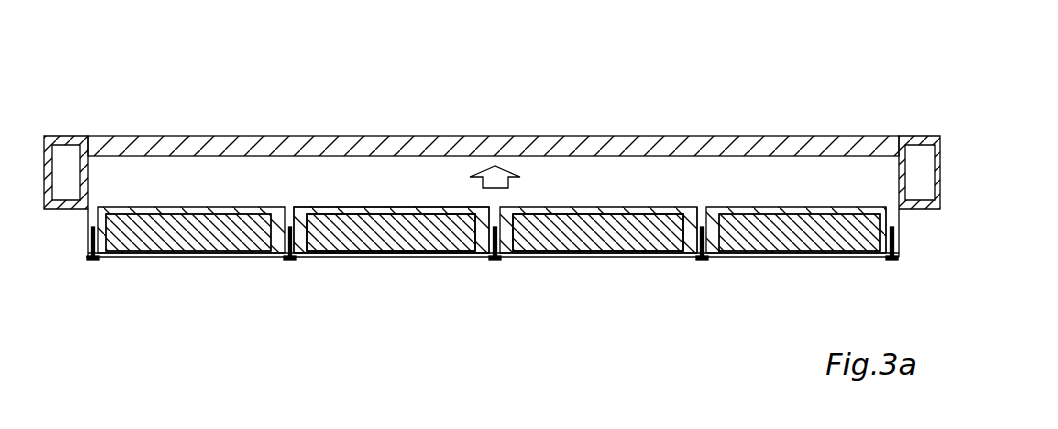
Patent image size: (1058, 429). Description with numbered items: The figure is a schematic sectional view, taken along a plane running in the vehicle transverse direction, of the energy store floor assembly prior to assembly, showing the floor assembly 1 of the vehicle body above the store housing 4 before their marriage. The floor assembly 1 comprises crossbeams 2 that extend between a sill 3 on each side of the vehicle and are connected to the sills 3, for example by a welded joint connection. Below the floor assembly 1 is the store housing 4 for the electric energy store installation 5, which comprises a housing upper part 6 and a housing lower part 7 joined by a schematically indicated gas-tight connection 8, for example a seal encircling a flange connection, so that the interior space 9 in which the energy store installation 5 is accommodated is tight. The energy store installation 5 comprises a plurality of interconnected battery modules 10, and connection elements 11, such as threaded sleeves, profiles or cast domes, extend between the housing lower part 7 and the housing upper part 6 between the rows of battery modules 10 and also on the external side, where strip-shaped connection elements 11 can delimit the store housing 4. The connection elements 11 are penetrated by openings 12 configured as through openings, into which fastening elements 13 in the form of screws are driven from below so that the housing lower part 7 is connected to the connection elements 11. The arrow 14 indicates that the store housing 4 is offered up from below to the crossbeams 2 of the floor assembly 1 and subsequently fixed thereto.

The floor assembly 1 is at (730, 93).
The crossbeam 2 is at (795, 143).
The sill 3 is at (70, 140).
The store housing 4 is at (391, 278).
The electric energy store installation 5 is at (438, 246).
The housing upper part 6 is at (382, 207).
The housing lower part 7 is at (337, 254).
The gas-tight connection 8 is at (93, 258).
The interior space 9 is at (552, 230).
The battery module 10 is at (617, 230).
The connection element 11 is at (900, 235).
The opening 12 is at (702, 207).
The fastening element 13 is at (290, 258).
The arrow 14 is at (490, 166).